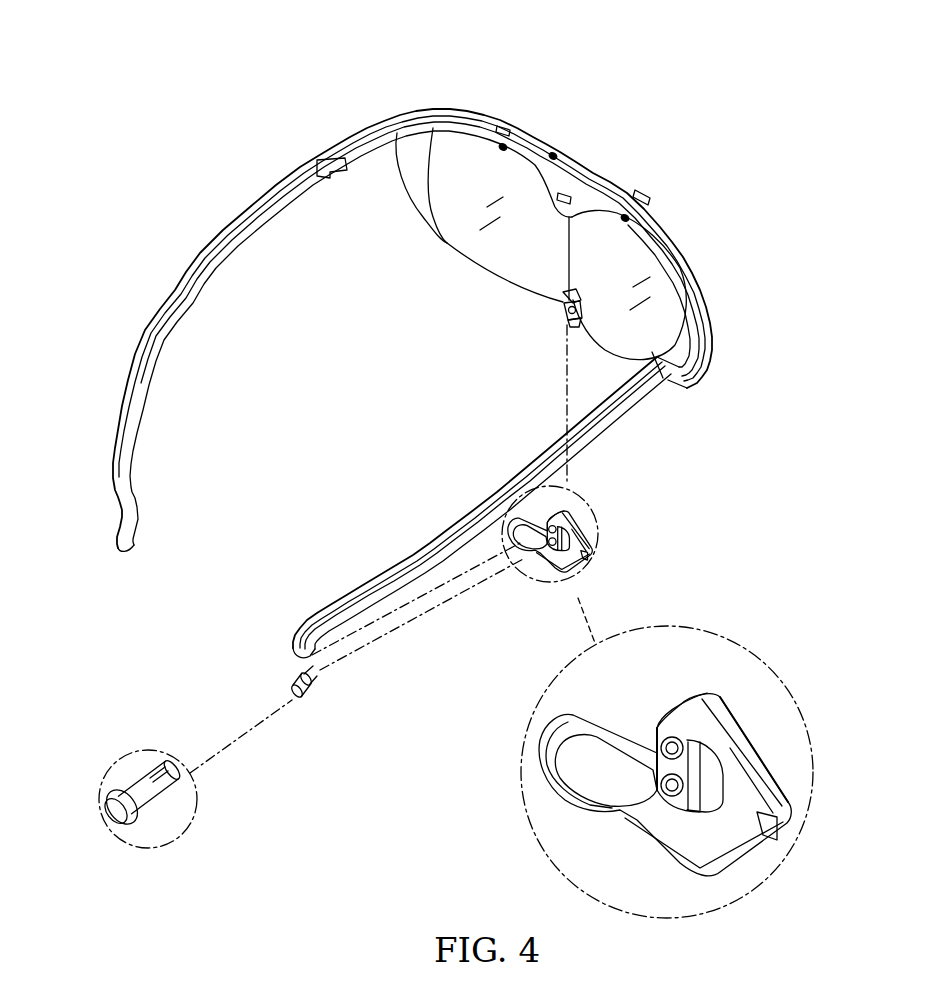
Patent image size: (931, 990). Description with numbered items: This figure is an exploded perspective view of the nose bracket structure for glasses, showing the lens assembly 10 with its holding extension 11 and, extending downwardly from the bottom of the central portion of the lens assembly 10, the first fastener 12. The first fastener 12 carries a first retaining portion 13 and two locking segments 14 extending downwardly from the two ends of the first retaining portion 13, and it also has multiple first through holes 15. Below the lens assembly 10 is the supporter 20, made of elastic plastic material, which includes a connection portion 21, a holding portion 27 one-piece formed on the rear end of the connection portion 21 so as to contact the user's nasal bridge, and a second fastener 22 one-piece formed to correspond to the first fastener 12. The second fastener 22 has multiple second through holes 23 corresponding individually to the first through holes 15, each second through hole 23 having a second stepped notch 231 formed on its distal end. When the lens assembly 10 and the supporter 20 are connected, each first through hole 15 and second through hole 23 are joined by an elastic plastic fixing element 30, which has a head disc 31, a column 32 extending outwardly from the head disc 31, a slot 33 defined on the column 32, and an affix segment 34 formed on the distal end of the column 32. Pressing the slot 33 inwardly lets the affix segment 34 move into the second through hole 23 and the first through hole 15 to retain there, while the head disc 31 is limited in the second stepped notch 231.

The lens assembly 10 is at (477, 177).
The holding extension 11 is at (340, 153).
The first fastener 12 is at (556, 341).
The first retaining portion 13 is at (563, 295).
The locking segments 14 is at (565, 312).
The first through holes 15 is at (575, 322).
The supporter 20 is at (590, 510).
The connection portion 21 is at (735, 807).
The second fastener 22 is at (748, 767).
The second through holes 23 is at (655, 728).
The second stepped notch 231 is at (660, 752).
The holding portion 27 is at (567, 740).
The fixing element 30 is at (146, 742).
The head disc 31 is at (112, 790).
The column 32 is at (148, 772).
The slot 33 is at (165, 803).
The affix segment 34 is at (148, 776).